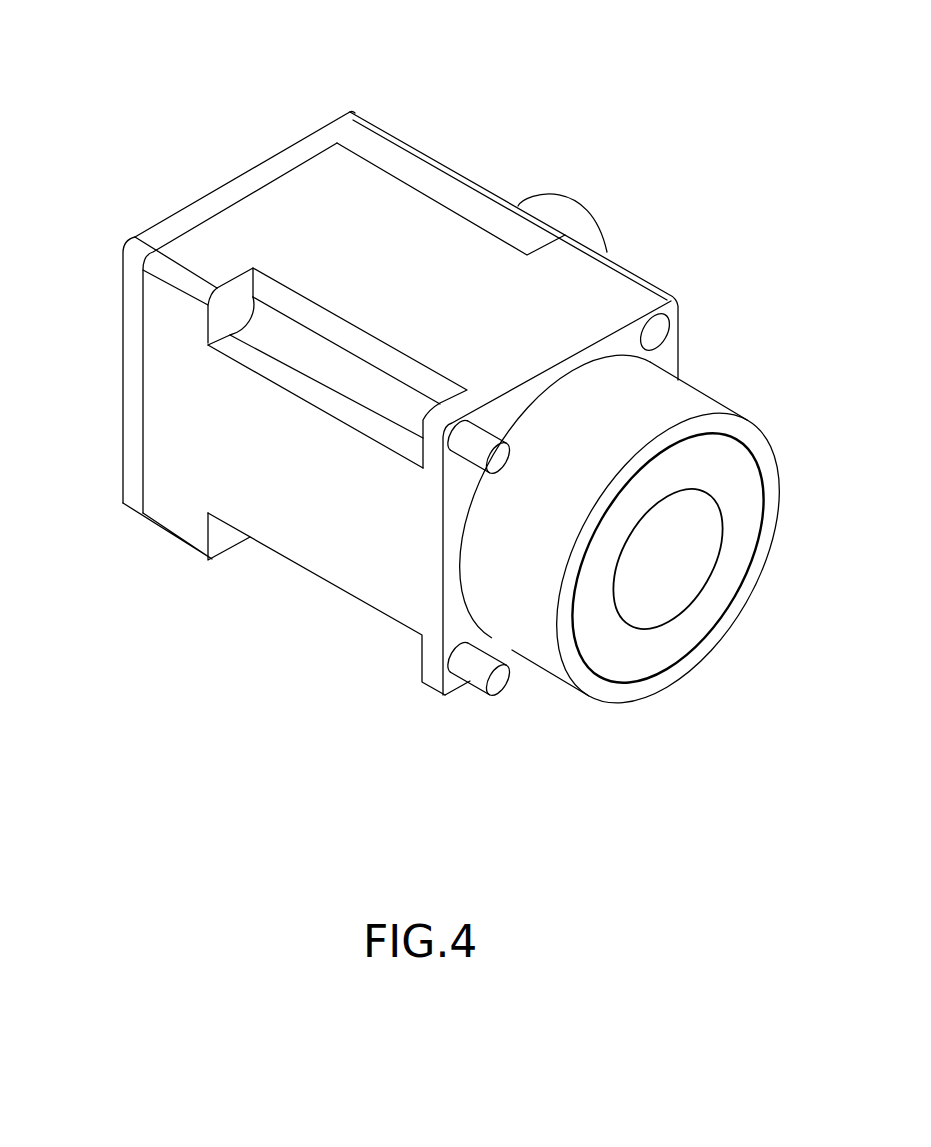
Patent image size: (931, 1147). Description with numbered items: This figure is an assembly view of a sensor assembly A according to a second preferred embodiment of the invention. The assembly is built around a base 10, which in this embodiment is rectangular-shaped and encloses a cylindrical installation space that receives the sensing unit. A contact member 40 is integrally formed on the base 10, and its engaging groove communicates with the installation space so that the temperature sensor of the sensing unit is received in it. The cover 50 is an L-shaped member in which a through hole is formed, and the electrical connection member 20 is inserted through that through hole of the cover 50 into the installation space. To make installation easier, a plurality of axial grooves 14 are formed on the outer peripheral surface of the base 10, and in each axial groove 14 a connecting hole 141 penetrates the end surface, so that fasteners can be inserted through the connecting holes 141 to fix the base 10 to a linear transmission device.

The sensor assembly A is at (153, 150).
The base 10 is at (627, 273).
The axial groove 14 is at (322, 395).
The connecting hole 141 is at (448, 465).
The electrical connection member 20 is at (543, 211).
The contact member 40 is at (683, 400).
The cover 50 is at (339, 133).